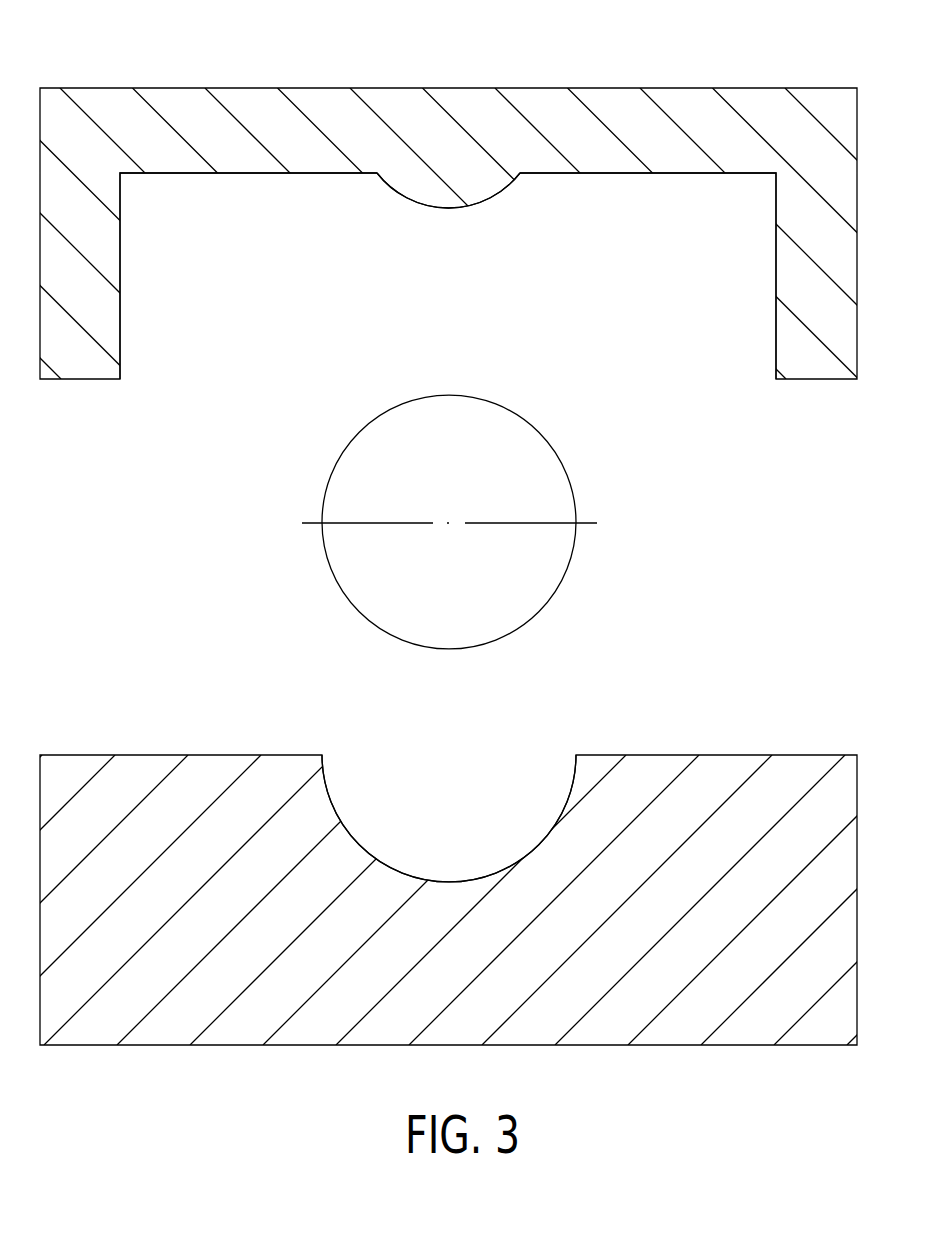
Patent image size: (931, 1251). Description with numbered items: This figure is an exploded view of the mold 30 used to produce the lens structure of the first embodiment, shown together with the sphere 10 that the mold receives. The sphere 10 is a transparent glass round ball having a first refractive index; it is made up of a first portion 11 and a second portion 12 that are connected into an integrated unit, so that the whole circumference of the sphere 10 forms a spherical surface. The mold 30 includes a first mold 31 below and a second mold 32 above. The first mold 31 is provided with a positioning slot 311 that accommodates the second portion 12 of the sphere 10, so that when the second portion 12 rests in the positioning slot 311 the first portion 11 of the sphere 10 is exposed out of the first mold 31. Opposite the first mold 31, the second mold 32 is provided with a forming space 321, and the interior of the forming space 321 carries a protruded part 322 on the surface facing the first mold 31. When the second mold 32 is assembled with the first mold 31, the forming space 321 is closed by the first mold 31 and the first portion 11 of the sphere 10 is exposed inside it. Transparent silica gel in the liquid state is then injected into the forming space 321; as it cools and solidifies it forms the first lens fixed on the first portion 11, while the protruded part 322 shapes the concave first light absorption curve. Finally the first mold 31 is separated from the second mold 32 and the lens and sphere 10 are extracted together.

The sphere 10 is at (447, 524).
The first portion 11 is at (553, 448).
The second portion 12 is at (548, 603).
The mold 30 is at (465, 840).
The first mold 31 is at (465, 853).
The positioning slot 311 is at (533, 785).
The second mold 32 is at (465, 229).
The forming space 321 is at (657, 320).
The protruded part 322 is at (405, 196).